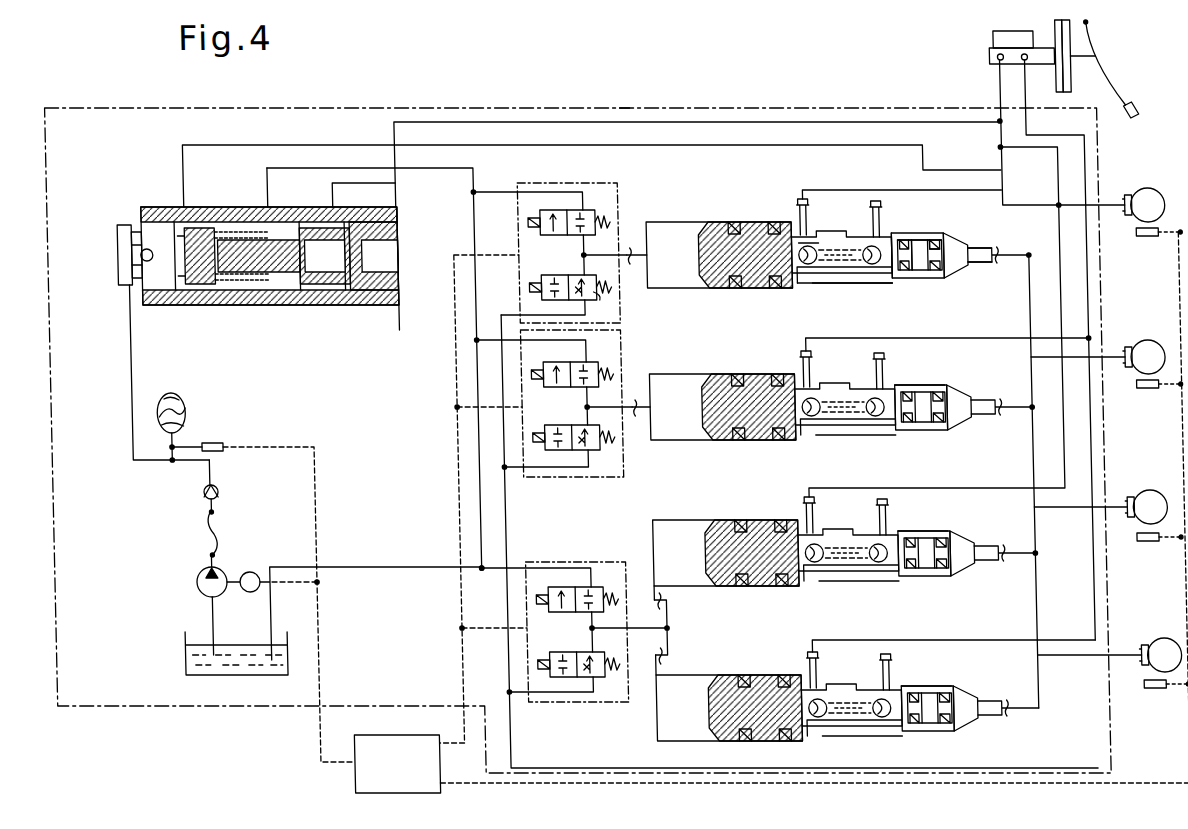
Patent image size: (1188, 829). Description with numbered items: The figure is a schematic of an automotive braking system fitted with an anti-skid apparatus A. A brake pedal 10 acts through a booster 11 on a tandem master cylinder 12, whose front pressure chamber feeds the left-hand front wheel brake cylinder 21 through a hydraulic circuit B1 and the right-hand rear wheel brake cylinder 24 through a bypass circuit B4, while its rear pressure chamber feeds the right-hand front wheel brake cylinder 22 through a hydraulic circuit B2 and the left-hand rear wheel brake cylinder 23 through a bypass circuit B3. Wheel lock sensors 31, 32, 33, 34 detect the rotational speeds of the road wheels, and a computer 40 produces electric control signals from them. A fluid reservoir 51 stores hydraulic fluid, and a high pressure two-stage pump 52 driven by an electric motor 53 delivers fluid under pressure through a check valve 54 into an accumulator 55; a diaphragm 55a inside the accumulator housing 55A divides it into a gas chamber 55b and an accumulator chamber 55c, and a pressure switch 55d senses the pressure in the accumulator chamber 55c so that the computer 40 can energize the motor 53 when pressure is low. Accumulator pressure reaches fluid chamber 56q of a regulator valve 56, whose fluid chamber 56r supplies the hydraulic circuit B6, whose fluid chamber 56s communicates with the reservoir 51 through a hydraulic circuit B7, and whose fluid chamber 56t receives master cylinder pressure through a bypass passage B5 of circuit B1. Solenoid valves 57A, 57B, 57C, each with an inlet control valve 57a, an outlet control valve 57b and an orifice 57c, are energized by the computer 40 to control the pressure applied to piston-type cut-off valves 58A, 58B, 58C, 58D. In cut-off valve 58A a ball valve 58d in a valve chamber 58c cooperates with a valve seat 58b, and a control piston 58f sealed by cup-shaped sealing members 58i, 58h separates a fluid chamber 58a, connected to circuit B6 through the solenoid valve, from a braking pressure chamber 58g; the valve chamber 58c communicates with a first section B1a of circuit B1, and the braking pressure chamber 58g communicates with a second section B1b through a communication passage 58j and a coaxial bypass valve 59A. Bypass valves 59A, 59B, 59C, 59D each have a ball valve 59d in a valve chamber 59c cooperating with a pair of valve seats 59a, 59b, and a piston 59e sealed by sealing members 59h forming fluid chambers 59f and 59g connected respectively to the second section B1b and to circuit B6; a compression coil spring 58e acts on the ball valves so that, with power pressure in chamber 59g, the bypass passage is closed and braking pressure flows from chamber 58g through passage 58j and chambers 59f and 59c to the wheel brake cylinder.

The anti-skid apparatus A is at (629, 107).
The brake pedal 10 is at (1137, 102).
The booster 11 is at (1040, 28).
The tandem master cylinder 12 is at (997, 55).
The left-hand front wheel brake cylinder 21 is at (1146, 192).
The right-hand front wheel brake cylinder 22 is at (1141, 345).
The left-hand rear wheel brake cylinder 23 is at (1144, 643).
The right-hand rear wheel brake cylinder 24 is at (1139, 494).
The wheel lock sensor 31 is at (1152, 240).
The wheel lock sensor 32 is at (1148, 390).
The wheel lock sensor 33 is at (1147, 690).
The wheel lock sensor 34 is at (1145, 543).
The computer 40 is at (397, 764).
The fluid reservoir 51 is at (180, 662).
The high pressure two-stage pump 52 is at (193, 582).
The electric motor 53 is at (248, 572).
The check valve 54 is at (214, 492).
The accumulator 55 is at (160, 399).
The diaphragm 55a is at (185, 404).
The gas chamber 55b is at (178, 395).
The accumulator chamber 55c is at (184, 422).
The pressure switch 55d is at (224, 447).
The accumulator housing 55A is at (154, 447).
The regulator valve 56 is at (244, 305).
The fluid chamber 56q is at (121, 242).
The fluid chamber 56r is at (189, 225).
The fluid chamber 56s is at (246, 240).
The fluid chamber 56t is at (322, 240).
The solenoid valve 57A is at (624, 208).
The solenoid valve 57B is at (626, 360).
The solenoid valve 57C is at (608, 562).
The inlet control valve 57a is at (532, 284).
The outlet control valve 57b is at (532, 224).
The orifice 57c is at (599, 297).
The cut-off valve 58A is at (807, 215).
The cut-off valve 58B is at (807, 374).
The cut-off valve 58C is at (803, 518).
The cut-off valve 58D is at (803, 674).
The fluid chamber 58a is at (718, 236).
The valve seat 58b is at (813, 279).
The valve chamber 58c is at (823, 231).
The ball valve 58d is at (845, 309).
The compression coil spring 58e is at (841, 236).
The control piston 58f is at (738, 271).
The braking pressure chamber 58g is at (778, 210).
The cup-shaped sealing member 58h is at (763, 271).
The cup-shaped sealing member 58i is at (739, 299).
The communication passage 58j is at (840, 284).
The bypass valve 59A is at (960, 269).
The bypass valve 59B is at (900, 434).
The bypass valve 59C is at (903, 580).
The bypass valve 59D is at (906, 734).
The valve seat 59a is at (883, 290).
The valve seat 59b is at (917, 224).
The valve chamber 59c is at (869, 219).
The ball valve 59d is at (908, 272).
The piston 59e is at (1001, 277).
The fluid chamber 59f is at (938, 277).
The fluid chamber 59g is at (1002, 240).
The cup-shaped sealing members 59h is at (950, 228).
The hydraulic circuit B1 is at (1006, 86).
The first section of hydraulic circuit B1 B1a is at (914, 190).
The second section of hydraulic circuit B1 B1b is at (1003, 206).
The hydraulic circuit B2 is at (1039, 88).
The bypass circuit B3 is at (1088, 590).
The bypass circuit B4 is at (1063, 152).
The bypass passage B5 is at (515, 122).
The hydraulic circuit B6 is at (290, 145).
The hydraulic circuit B7 is at (456, 382).